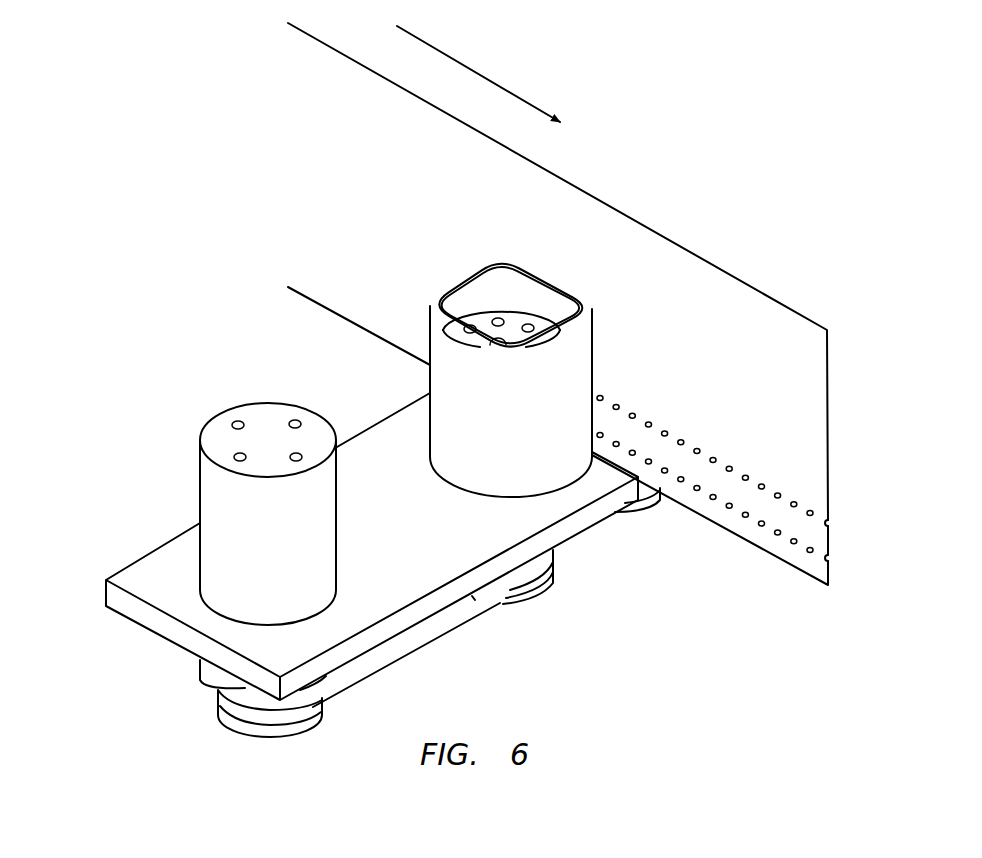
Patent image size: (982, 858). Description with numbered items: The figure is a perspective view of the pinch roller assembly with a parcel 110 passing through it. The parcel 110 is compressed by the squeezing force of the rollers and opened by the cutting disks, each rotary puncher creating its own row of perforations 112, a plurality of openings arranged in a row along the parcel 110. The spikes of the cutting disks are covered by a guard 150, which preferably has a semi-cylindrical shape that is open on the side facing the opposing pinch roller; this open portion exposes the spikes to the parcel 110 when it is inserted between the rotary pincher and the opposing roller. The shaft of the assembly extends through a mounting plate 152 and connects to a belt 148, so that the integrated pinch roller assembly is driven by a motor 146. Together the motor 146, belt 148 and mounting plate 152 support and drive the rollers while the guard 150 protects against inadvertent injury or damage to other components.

The parcel 110 is at (784, 274).
The perforations 112 is at (840, 525).
The motor 146 is at (171, 508).
The belt 148 is at (439, 662).
The guard 150 is at (532, 457).
The mounting plate 152 is at (98, 594).